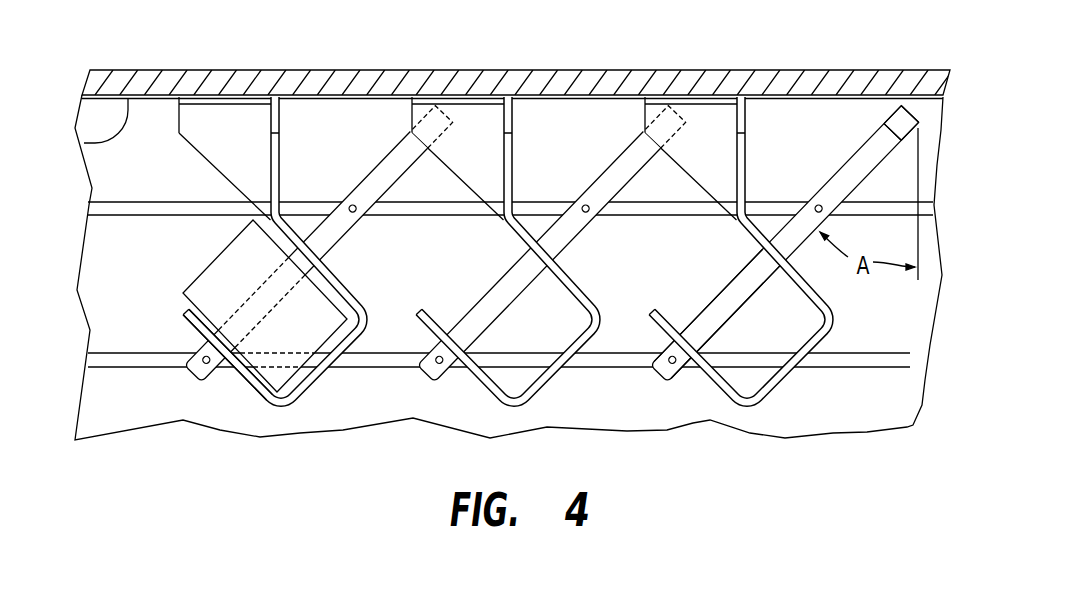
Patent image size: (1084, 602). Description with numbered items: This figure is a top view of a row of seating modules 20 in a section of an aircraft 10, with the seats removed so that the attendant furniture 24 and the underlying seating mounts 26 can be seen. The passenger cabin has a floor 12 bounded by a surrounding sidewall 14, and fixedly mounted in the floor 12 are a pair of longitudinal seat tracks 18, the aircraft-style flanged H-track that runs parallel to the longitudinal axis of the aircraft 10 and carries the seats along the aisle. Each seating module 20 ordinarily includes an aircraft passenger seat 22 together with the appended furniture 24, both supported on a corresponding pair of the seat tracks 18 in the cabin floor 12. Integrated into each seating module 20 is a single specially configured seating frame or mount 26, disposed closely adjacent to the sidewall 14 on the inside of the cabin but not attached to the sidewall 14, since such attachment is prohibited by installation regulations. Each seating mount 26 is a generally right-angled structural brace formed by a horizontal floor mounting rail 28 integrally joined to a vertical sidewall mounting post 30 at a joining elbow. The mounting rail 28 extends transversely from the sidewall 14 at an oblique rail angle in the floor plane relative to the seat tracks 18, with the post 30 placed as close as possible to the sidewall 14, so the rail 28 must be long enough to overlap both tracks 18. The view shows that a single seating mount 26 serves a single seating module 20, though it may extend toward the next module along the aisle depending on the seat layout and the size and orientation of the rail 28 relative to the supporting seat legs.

The aircraft 10 is at (468, 70).
The floor 12 is at (175, 265).
The sidewall 14 is at (88, 145).
The seat tracks 18 is at (125, 208).
The seating module 20 is at (323, 388).
The aircraft passenger seat 22 is at (223, 290).
The appended furniture 24 is at (258, 392).
The seating mount 26 is at (272, 277).
The floor mounting rail 28 is at (721, 289).
The sidewall mounting post 30 is at (898, 135).